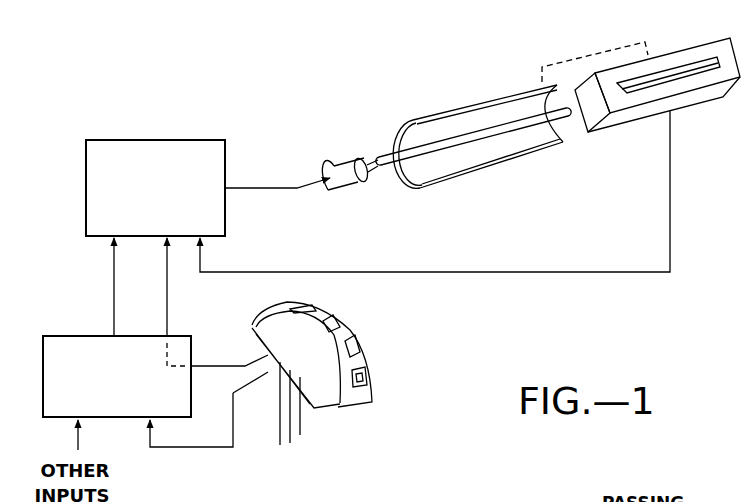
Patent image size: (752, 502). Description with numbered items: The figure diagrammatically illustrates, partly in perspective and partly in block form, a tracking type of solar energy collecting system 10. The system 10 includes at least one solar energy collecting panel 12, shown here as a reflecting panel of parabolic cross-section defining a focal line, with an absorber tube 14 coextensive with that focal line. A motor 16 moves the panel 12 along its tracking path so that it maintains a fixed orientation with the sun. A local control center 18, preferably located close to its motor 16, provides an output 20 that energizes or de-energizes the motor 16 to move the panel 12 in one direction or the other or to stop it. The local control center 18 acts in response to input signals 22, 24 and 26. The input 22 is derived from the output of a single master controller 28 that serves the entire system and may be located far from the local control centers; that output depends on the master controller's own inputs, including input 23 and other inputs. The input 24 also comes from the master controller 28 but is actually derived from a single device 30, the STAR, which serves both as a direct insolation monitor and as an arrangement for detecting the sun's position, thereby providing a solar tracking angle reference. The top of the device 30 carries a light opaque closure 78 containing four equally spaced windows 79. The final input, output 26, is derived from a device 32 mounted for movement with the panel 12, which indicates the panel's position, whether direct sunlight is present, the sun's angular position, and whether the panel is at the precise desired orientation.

The tracking type of solar energy collecting system 10 is at (318, 78).
The solar energy collecting panel 12 is at (495, 153).
The absorber tube 14 is at (563, 117).
The motor 16 is at (346, 183).
The local control center 18 is at (212, 145).
The output 20 is at (255, 188).
The input 22 is at (114, 279).
The input 23 is at (197, 447).
The input 24 is at (167, 283).
The output 26 is at (315, 271).
The master controller 28 is at (68, 336).
The device (STAR) 30 is at (368, 331).
The device 32 is at (682, 42).
The light opaque closure 78 is at (373, 368).
The windows 79 is at (361, 382).